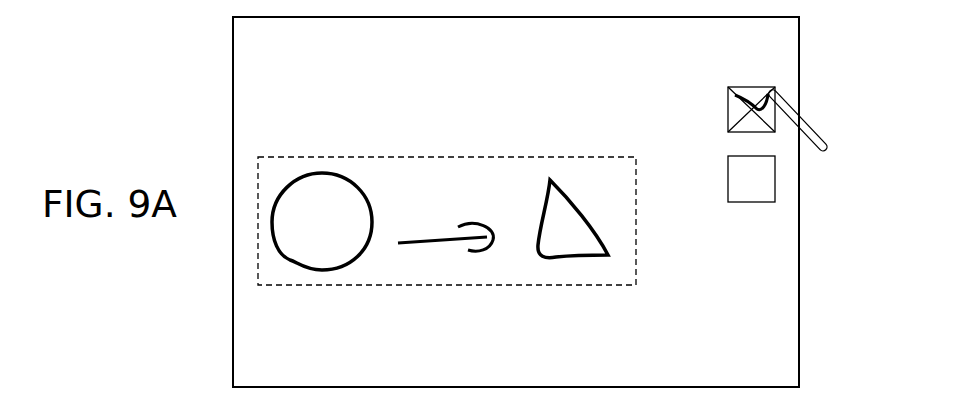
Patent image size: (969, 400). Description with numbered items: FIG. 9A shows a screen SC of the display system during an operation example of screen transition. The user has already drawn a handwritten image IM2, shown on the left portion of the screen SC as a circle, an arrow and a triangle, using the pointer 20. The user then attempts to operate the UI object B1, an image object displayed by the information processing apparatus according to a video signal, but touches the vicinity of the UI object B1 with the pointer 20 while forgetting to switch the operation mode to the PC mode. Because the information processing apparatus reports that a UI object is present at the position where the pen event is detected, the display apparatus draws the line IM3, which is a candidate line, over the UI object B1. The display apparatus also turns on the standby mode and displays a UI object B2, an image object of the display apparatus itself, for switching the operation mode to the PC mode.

The screen SC is at (800, 334).
The handwritten image IM2 is at (636, 257).
The line IM3 is at (728, 93).
The UI object B1 is at (760, 86).
The UI object B2 is at (752, 203).
The pointer 20 is at (813, 131).